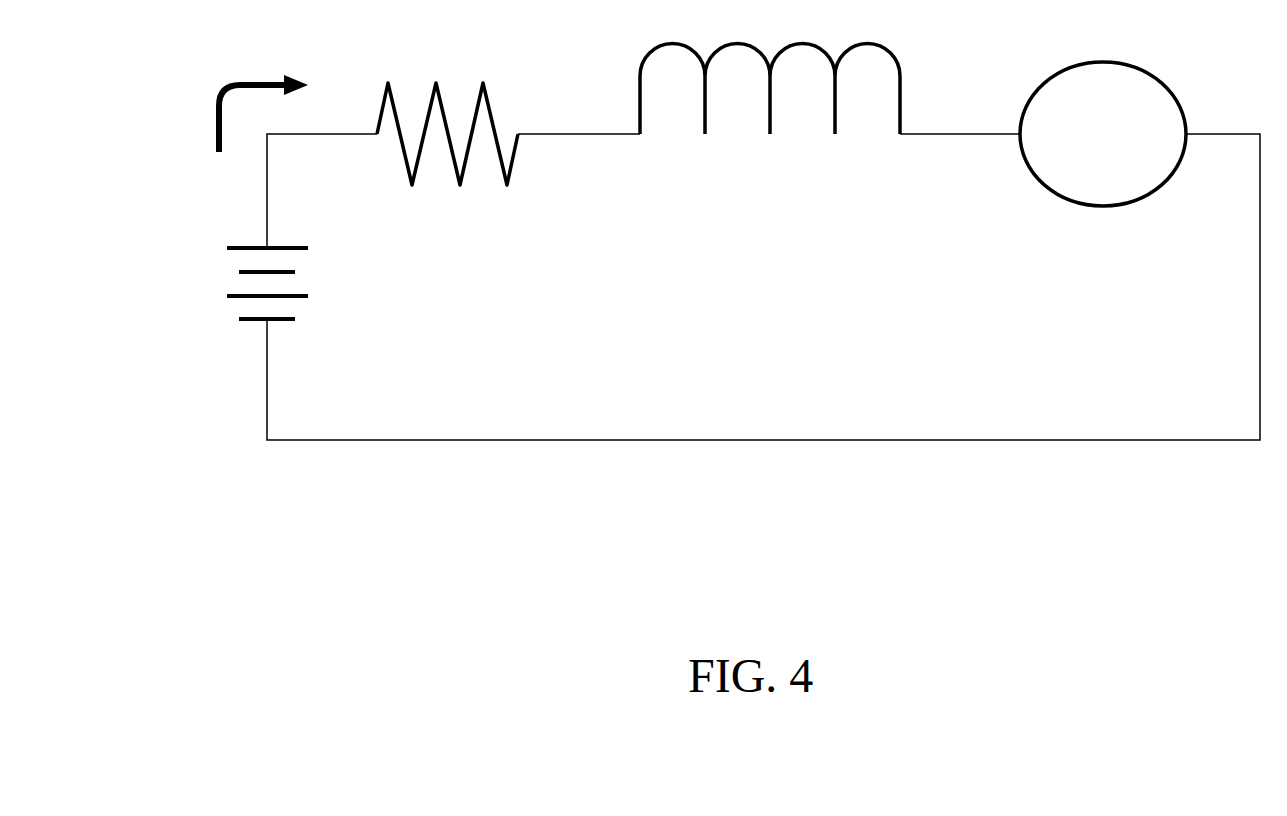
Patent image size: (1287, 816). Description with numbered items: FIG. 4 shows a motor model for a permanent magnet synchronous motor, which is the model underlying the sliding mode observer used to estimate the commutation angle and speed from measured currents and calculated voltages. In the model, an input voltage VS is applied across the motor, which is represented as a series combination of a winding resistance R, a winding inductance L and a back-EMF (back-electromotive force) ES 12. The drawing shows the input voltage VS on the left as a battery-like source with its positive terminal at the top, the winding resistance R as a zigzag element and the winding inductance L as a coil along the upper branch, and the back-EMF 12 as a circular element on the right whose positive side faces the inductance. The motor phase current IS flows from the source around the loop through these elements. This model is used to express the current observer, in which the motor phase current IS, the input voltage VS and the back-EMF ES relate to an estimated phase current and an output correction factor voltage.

The back-EMF 12 is at (1155, 71).
The winding resistance R is at (447, 101).
The winding inductance L is at (770, 67).
The input voltage VS is at (238, 282).
The motor phase current IS is at (263, 91).